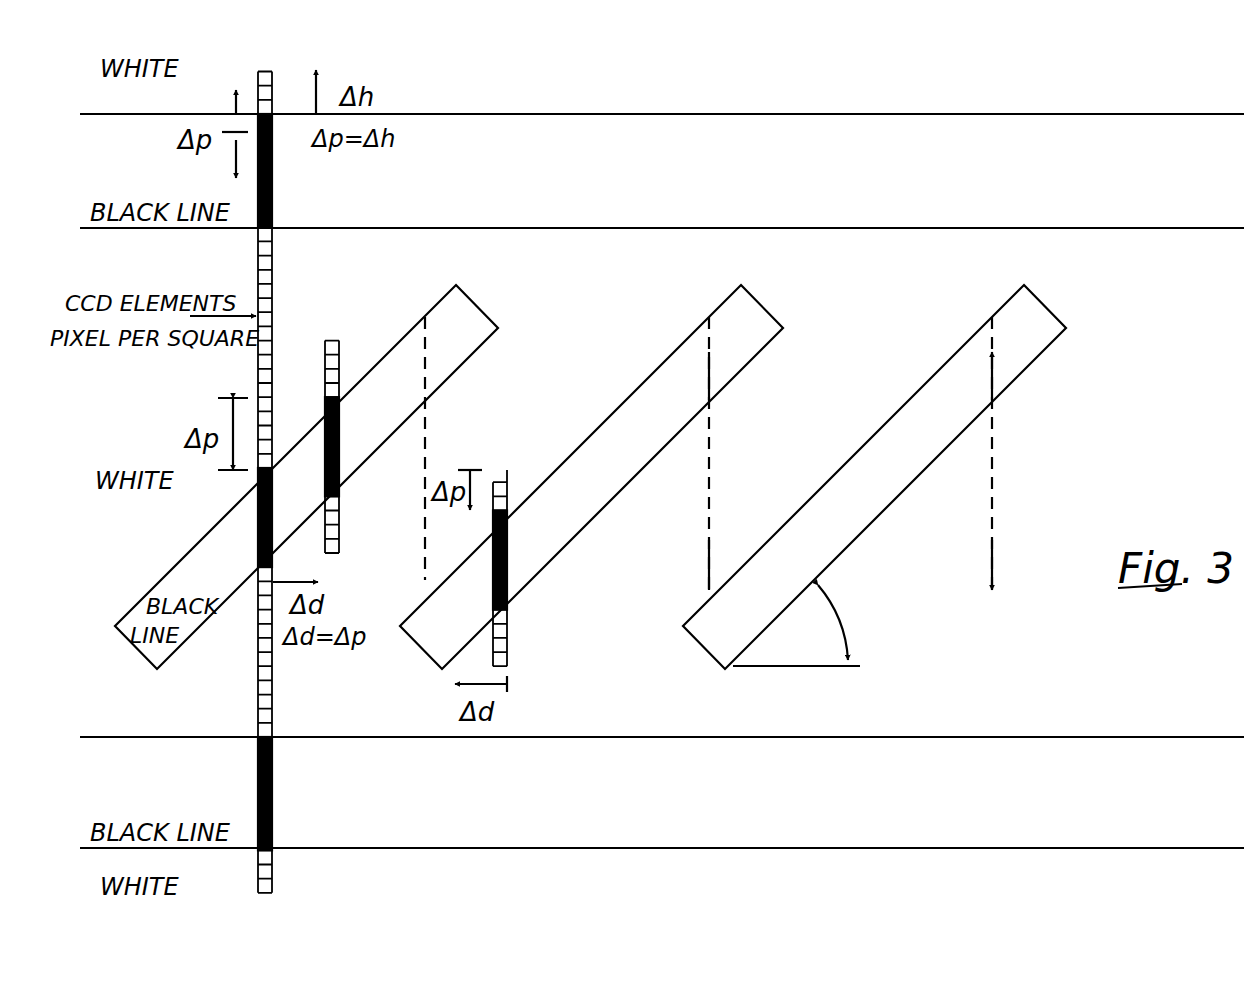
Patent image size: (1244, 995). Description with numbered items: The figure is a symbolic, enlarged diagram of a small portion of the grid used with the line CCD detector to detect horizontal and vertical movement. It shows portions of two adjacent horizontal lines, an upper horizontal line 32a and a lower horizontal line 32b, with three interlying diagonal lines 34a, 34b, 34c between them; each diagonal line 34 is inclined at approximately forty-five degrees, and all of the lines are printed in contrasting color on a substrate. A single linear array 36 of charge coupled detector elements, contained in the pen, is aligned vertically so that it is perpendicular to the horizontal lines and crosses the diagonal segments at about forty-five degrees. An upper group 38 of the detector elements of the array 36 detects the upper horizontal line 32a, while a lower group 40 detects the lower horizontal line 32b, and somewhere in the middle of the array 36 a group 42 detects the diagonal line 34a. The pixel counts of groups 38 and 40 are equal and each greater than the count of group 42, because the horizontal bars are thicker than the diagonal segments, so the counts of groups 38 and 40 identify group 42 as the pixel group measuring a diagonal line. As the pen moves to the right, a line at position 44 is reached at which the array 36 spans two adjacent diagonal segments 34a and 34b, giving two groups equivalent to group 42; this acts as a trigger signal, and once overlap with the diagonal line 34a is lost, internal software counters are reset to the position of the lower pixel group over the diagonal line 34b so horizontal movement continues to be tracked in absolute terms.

The upper horizontal line 32a is at (1027, 90).
The lower horizontal line 32b is at (1058, 745).
The diagonal line 34 is at (912, 462).
The first diagonal line 34a is at (470, 312).
The second diagonal line 34b is at (762, 322).
The third diagonal line 34c is at (1050, 328).
The single linear array of CCD elements 36 is at (321, 482).
The upper group of detector elements 38 is at (278, 114).
The lower group of detector elements 40 is at (278, 737).
The middle group of detector elements 42 is at (278, 473).
The trigger line position 44 is at (425, 433).